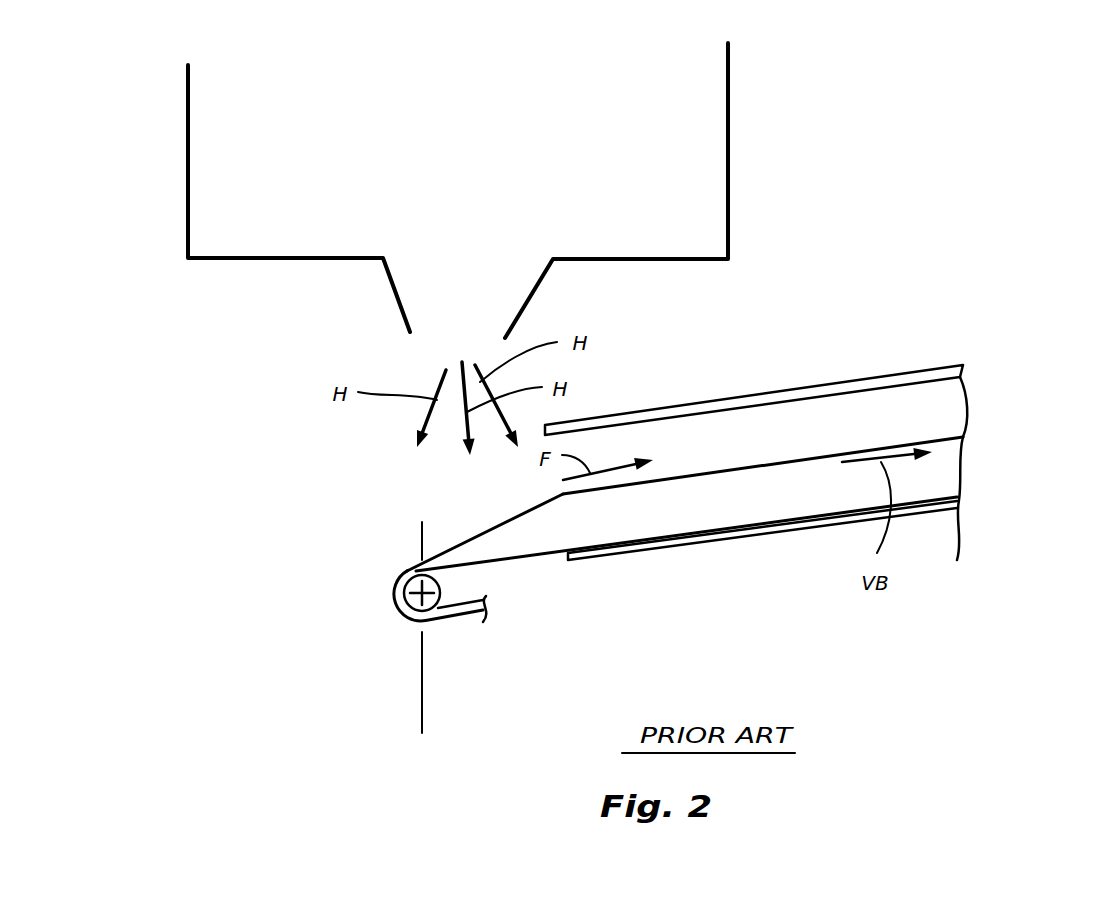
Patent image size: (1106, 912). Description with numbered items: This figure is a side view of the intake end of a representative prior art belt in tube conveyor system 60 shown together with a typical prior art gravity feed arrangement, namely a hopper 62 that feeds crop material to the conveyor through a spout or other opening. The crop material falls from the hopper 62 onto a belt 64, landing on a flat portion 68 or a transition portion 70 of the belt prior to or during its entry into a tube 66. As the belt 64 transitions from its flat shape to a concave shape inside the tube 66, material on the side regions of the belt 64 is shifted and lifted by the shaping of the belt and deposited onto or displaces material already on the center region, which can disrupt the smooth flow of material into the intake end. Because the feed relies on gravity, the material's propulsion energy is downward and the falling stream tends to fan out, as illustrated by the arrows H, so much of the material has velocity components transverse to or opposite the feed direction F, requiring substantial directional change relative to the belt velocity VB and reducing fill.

The prior art belt in tube conveyor system 60 is at (960, 198).
The hopper 62 is at (732, 133).
The belt 64 is at (720, 470).
The tube 66 is at (879, 375).
The flat portion 68 is at (448, 548).
The transition portion 70 is at (482, 514).